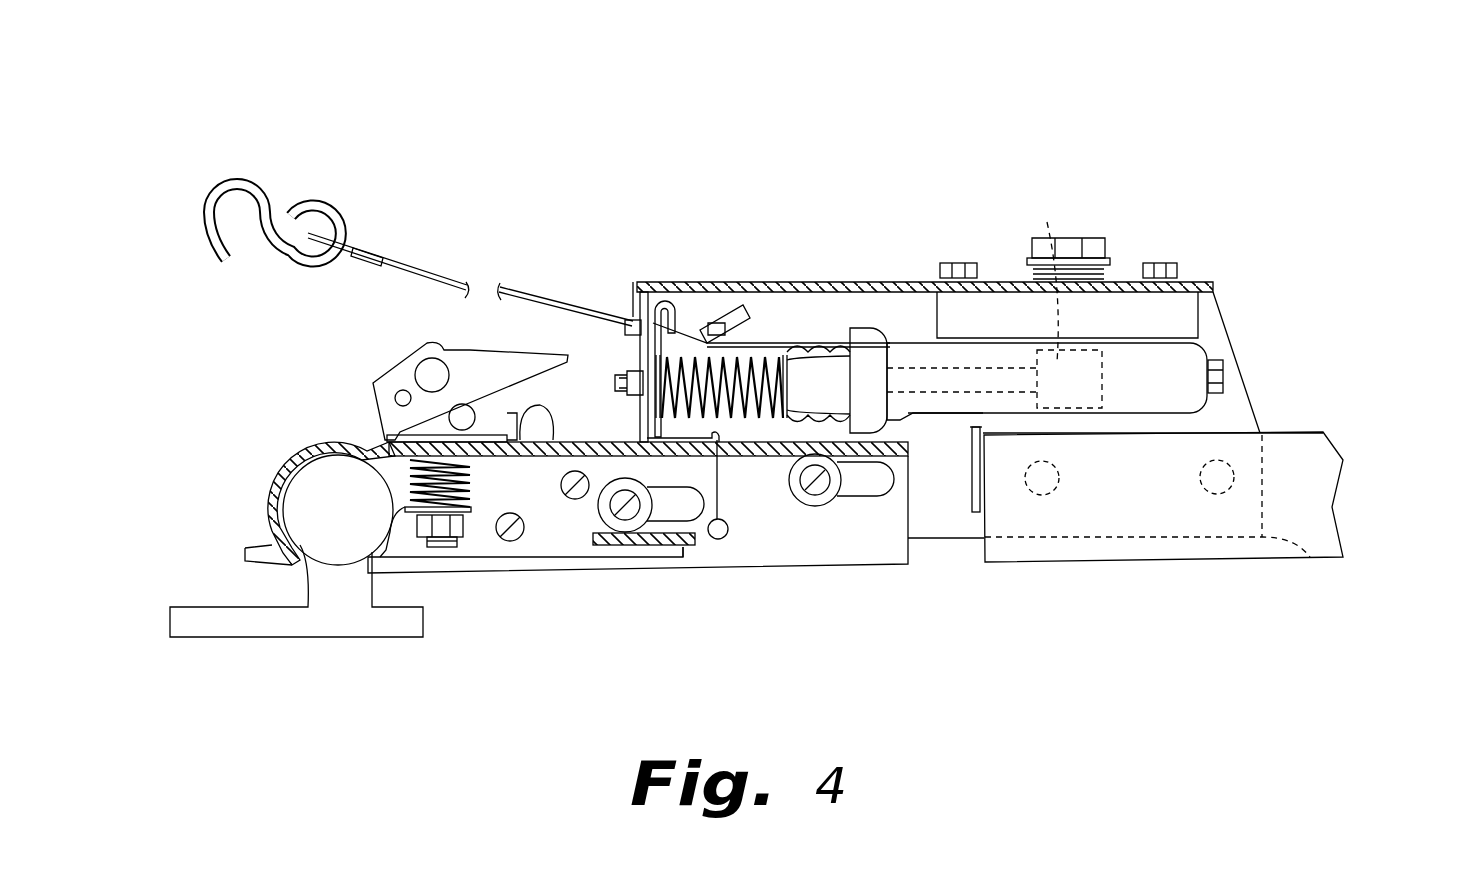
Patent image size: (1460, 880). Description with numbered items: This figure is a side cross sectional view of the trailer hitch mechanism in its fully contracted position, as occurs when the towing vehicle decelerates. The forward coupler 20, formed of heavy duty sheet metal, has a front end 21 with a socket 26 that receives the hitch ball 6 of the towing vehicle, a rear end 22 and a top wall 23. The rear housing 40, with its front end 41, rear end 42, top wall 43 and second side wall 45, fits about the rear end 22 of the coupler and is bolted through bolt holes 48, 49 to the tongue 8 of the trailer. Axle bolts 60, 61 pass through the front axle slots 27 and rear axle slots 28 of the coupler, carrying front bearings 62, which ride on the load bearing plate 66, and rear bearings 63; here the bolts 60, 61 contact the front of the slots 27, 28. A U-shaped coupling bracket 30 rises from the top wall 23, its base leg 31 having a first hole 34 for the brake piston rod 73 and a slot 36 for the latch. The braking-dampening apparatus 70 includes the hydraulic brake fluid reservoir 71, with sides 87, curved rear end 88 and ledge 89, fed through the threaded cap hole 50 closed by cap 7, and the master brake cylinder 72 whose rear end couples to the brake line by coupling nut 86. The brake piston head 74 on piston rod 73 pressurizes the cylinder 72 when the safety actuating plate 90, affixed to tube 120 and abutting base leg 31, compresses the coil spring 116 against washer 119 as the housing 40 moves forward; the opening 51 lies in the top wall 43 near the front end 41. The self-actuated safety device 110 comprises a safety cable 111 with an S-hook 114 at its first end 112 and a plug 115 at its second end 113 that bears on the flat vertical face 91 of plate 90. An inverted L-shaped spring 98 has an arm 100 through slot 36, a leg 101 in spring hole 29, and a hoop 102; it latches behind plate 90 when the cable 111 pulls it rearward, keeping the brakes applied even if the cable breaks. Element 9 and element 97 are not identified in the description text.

The hitch ball 6 is at (338, 535).
The cap 7 is at (1075, 238).
The tongue 8 is at (1345, 510).
The connector 9 is at (702, 427).
The forward coupler 20 is at (312, 446).
The front end 21 is at (262, 536).
The rear end 22 is at (880, 567).
The top wall 23 is at (390, 430).
The socket 26 is at (268, 482).
The front axle slots 27 is at (680, 558).
The rear axle slots 28 is at (910, 537).
The spring hole 29 is at (735, 455).
The U-shaped coupling bracket 30 is at (560, 458).
The base leg 31 is at (565, 497).
The first hole 34 is at (590, 437).
The slot 36 is at (660, 522).
The rear housing 40 is at (1186, 262).
The front end 41 is at (645, 282).
The rear end 42 is at (1214, 284).
The top wall 43 is at (905, 282).
The second side wall 45 is at (1310, 557).
The bolt holes 48 is at (1042, 495).
The bolt holes 49 is at (1212, 494).
The threaded cap hole 50 is at (1047, 224).
The opening 51 is at (722, 312).
The axle bolt 60 is at (612, 527).
The axle bolt 61 is at (830, 500).
The front bearings 62 is at (600, 522).
The rear bearings 63 is at (817, 500).
The load bearing plate 66 is at (668, 547).
The braking-dampening apparatus 70 is at (1205, 296).
The hydraulic brake fluid reservoir 71 is at (1192, 303).
The master brake cylinder 72 is at (1197, 397).
The brake piston rod 73 is at (623, 320).
The brake piston head 74 is at (1082, 238).
The coupling nut 86 is at (1225, 377).
The sides 87 is at (1090, 310).
The curved rear end 88 is at (1220, 342).
The ledge 89 is at (1118, 343).
The safety actuating plate 90 is at (567, 353).
The flat vertical face 91 is at (630, 411).
The boot 97 is at (743, 320).
The inverted L-shaped spring 98 is at (790, 352).
The arm 100 is at (668, 355).
The leg 101 is at (720, 440).
The hoop 102 is at (721, 540).
The self-actuated safety device 110 is at (413, 250).
The safety cable 111 is at (403, 250).
The first end 112 is at (452, 264).
The second end 113 is at (670, 308).
The S-hook 114 is at (207, 196).
The plug 115 is at (622, 282).
The coil spring 116 is at (843, 345).
The washer 119 is at (882, 340).
The tube 120 is at (757, 352).